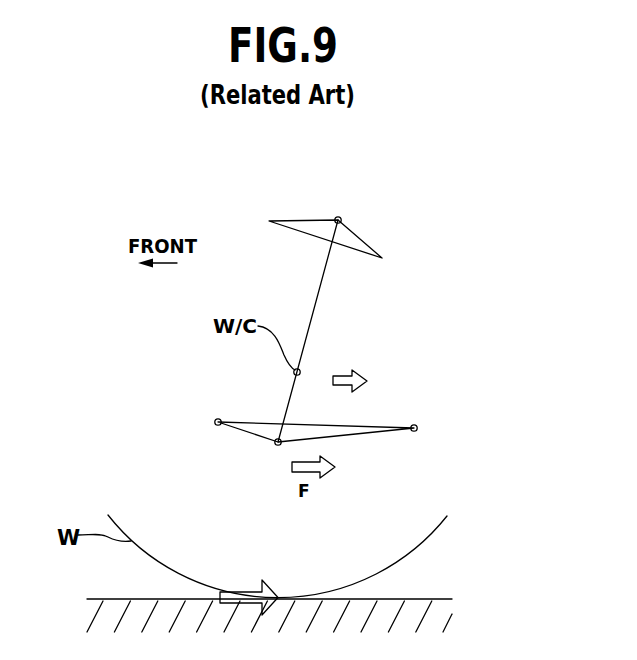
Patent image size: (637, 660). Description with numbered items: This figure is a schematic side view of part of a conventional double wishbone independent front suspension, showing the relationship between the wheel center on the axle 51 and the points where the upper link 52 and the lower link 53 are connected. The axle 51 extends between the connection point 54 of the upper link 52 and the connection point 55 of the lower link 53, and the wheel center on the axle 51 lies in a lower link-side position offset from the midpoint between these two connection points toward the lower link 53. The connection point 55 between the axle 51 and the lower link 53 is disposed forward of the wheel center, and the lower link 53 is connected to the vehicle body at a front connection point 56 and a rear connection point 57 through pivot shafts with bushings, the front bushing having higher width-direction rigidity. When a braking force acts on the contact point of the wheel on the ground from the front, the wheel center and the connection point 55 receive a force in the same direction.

The axle 51 is at (316, 306).
The upper link 52 is at (311, 218).
The lower link 53 is at (358, 436).
The connection point 54 is at (341, 219).
The connection point 55 is at (276, 447).
The front connection point 56 is at (215, 421).
The rear connection point 57 is at (418, 426).